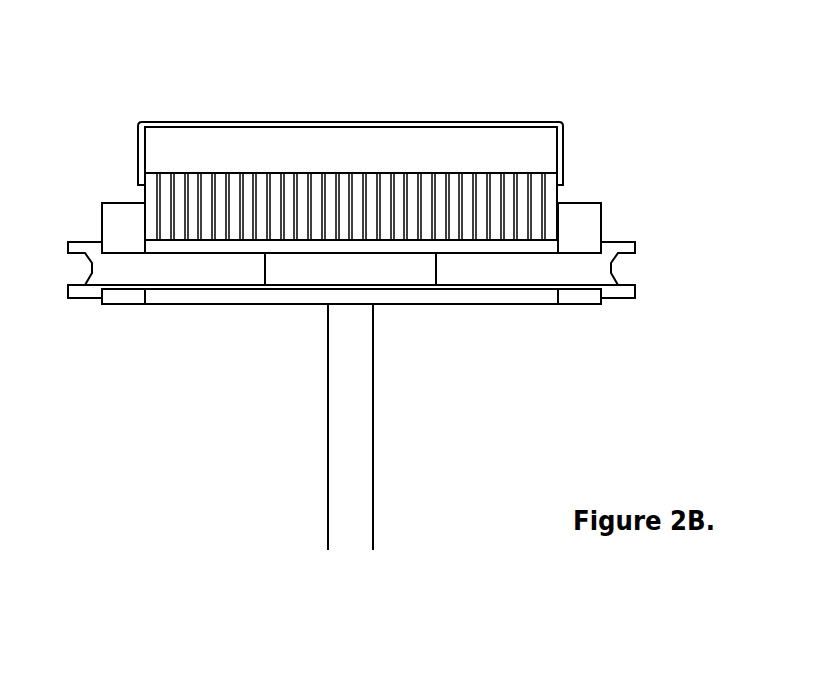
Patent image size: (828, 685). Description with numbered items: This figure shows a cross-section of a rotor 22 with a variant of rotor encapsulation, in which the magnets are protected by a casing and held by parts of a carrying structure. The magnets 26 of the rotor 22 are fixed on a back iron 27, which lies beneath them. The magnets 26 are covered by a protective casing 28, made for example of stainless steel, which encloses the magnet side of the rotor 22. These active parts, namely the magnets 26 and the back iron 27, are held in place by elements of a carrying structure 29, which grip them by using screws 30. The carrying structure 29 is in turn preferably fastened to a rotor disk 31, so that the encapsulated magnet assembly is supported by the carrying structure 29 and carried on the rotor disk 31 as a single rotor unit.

The rotor 22 is at (290, 100).
The magnets 26 is at (481, 144).
The back iron 27 is at (380, 205).
The protective casing 28 is at (397, 123).
The carrying structure 29 is at (115, 207).
The screws 30 is at (87, 298).
The rotor disk 31 is at (343, 424).